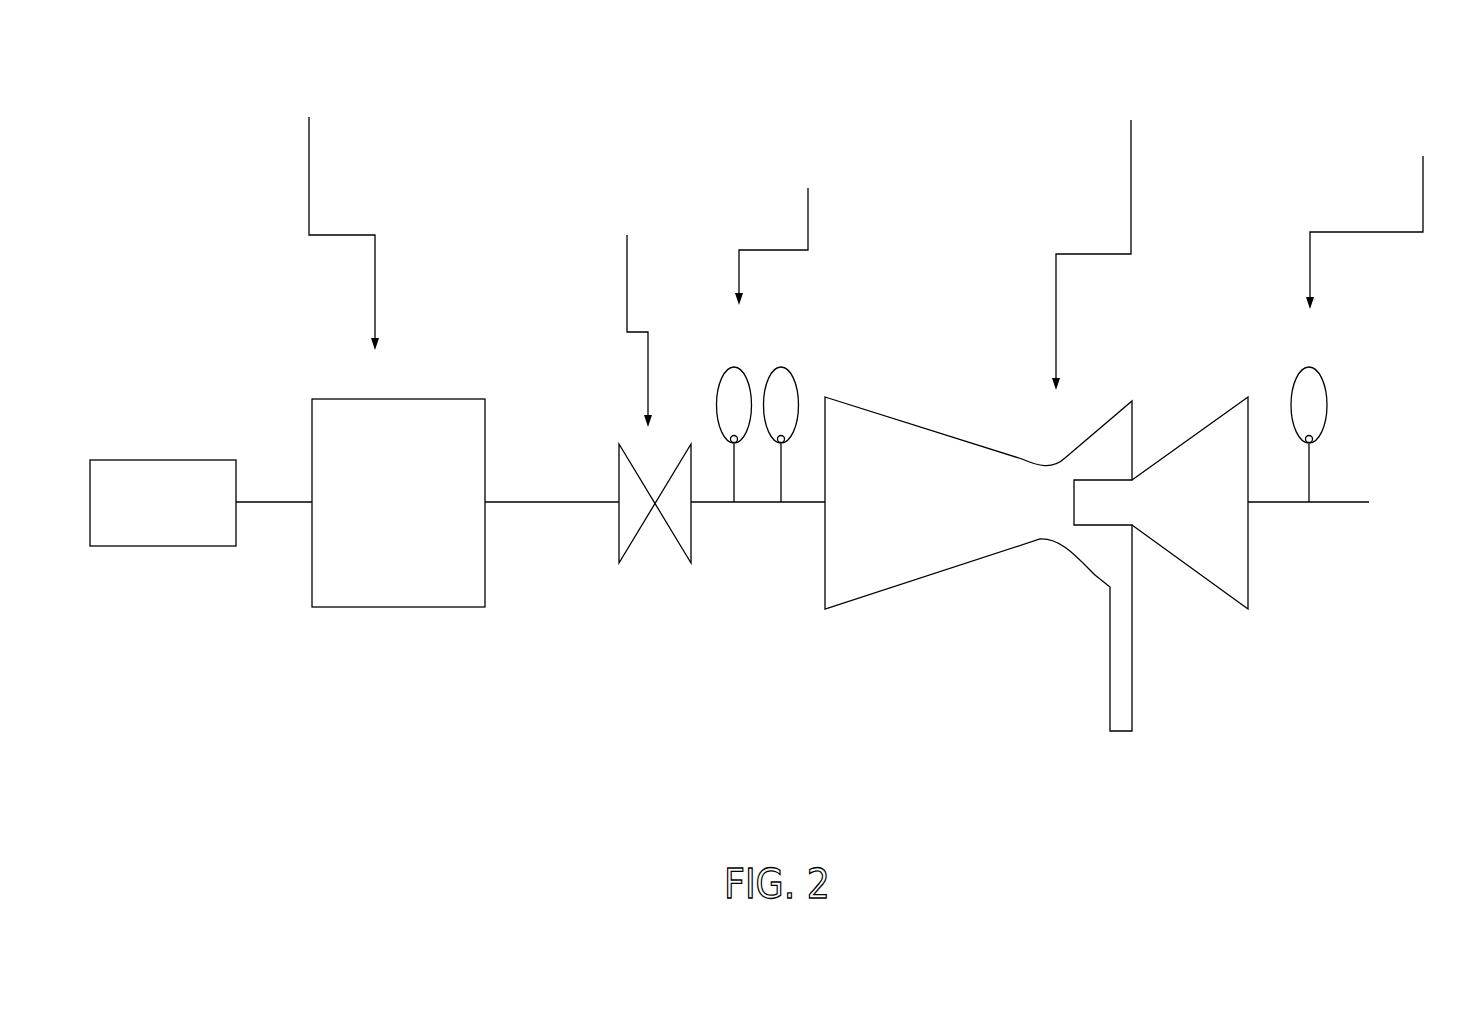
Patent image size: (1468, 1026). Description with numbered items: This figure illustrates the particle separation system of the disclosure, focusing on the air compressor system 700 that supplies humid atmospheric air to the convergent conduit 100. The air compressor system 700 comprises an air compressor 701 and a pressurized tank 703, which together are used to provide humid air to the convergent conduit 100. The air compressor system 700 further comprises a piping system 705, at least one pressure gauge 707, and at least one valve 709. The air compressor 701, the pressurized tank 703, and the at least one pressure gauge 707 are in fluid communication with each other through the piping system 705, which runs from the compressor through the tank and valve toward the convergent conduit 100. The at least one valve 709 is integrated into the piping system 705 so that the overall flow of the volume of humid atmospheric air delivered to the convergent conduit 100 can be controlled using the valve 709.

The air compressor system 700 is at (500, 53).
The air compressor 701 is at (162, 546).
The pressurized tank 703 is at (400, 607).
The piping system 705 is at (552, 504).
The pressure gauge 707 is at (781, 367).
The valve 709 is at (619, 444).
The convergent conduit 100 is at (853, 643).